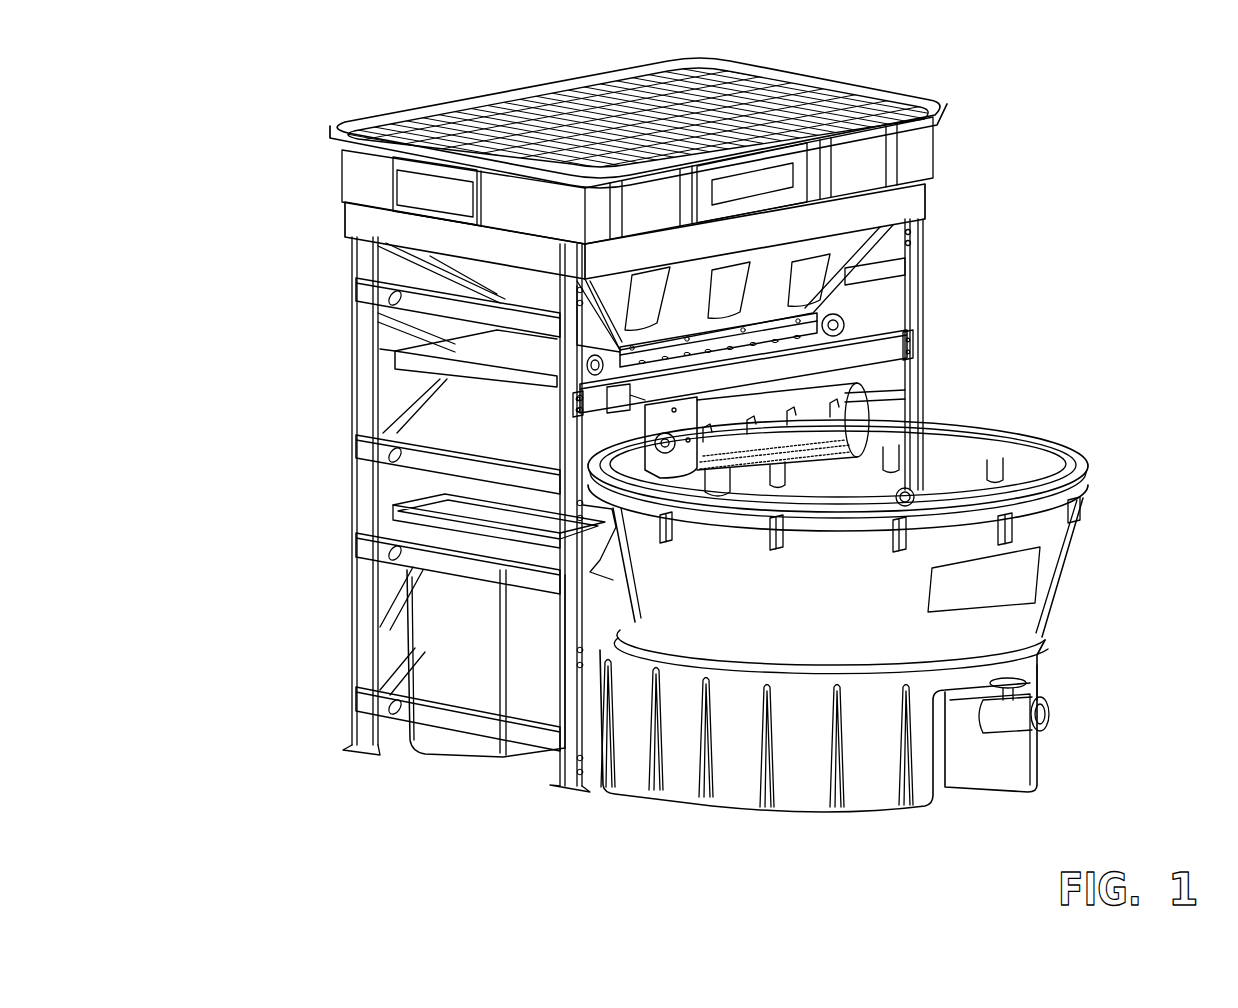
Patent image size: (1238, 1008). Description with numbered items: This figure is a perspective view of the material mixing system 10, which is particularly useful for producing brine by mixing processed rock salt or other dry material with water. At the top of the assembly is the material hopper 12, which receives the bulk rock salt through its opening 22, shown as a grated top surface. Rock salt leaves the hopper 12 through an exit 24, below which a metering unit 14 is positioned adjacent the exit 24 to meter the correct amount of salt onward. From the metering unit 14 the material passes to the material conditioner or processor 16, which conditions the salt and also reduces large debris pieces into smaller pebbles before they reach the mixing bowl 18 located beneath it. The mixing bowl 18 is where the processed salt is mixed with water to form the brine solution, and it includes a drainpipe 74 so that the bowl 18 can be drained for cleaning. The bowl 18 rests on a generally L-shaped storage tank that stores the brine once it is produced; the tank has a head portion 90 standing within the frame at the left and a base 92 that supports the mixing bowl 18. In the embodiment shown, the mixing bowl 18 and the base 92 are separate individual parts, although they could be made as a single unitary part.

The material mixing system 10 is at (168, 117).
The material hopper 12 is at (914, 150).
The metering unit 14 is at (607, 384).
The material conditioner or processor 16 is at (808, 420).
The mixing bowl 18 is at (946, 472).
The opening 22 is at (447, 112).
The exit 24 is at (840, 317).
The drainpipe 74 is at (993, 717).
The head portion 90 is at (443, 665).
The base 92 is at (800, 785).